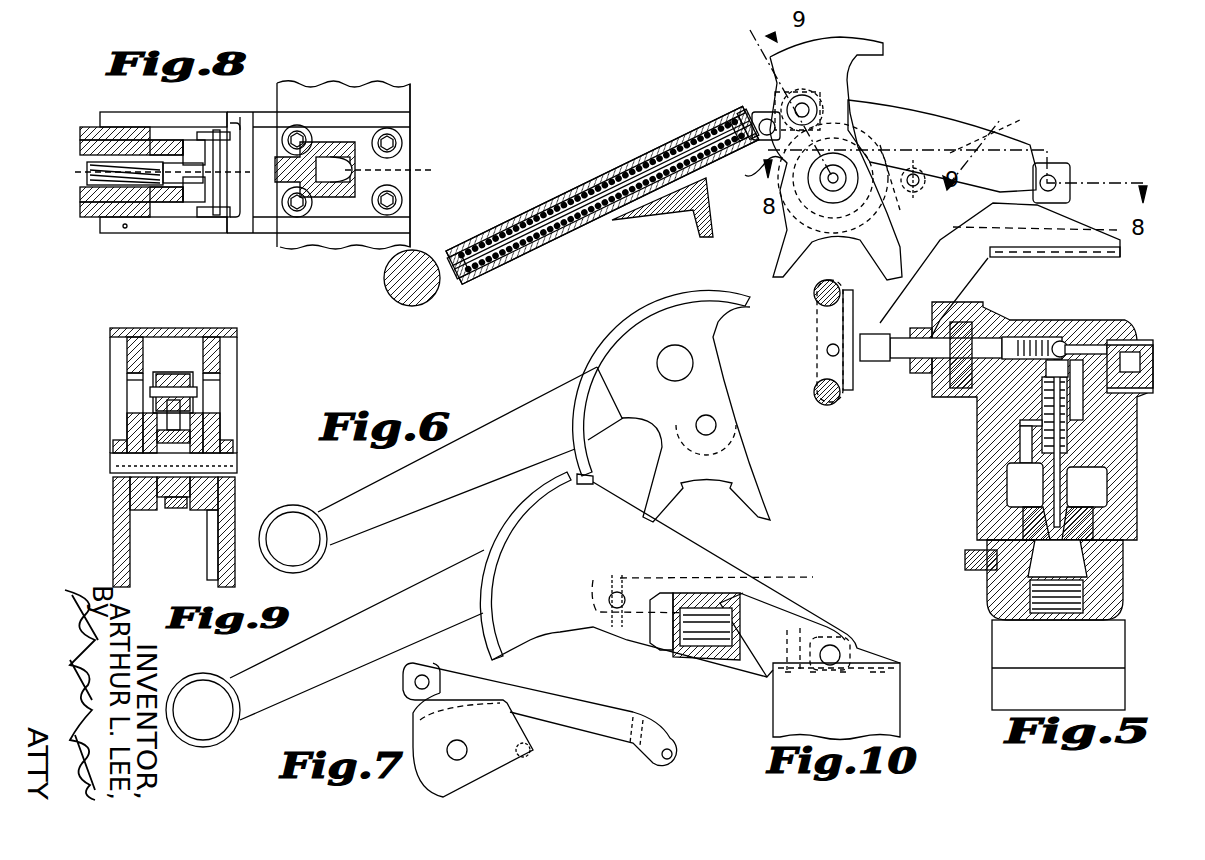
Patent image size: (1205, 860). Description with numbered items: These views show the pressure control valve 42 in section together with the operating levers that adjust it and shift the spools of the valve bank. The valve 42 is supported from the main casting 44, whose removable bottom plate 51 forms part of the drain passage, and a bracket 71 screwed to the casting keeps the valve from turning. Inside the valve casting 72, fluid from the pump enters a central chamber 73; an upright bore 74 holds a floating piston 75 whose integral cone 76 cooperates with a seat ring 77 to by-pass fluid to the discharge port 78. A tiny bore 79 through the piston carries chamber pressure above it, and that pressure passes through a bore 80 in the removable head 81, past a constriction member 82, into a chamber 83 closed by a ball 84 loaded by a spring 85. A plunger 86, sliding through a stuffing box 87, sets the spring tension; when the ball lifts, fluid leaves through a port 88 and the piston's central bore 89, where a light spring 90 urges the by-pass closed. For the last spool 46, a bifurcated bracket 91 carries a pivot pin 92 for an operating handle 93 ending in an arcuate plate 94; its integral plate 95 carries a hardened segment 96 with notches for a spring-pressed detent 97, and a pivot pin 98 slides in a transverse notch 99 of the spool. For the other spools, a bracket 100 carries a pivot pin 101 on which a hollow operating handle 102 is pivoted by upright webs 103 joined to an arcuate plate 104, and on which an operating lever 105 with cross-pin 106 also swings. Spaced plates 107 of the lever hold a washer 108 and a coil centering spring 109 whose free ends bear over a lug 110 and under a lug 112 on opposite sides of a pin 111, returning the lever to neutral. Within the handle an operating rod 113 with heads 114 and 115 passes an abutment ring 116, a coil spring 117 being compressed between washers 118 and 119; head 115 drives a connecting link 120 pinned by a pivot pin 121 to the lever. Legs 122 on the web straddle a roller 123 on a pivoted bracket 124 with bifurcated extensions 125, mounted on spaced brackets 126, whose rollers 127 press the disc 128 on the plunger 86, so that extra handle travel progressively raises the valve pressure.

In FIG. 5, the pressure control valve 42 is at (960, 445).
In FIG. 8, the main body or casting 44 is at (397, 240).
In FIG. 10, the main body or casting 44 is at (883, 703).
In FIG. 8, the spool 46 is at (355, 177).
In FIG. 6, the spool 46 is at (1070, 178).
In FIG. 10, the spool 46 is at (850, 657).
In FIG. 5, the removable bottom plate 51 is at (1107, 688).
In FIG. 5, the bracket 71 is at (965, 557).
In FIG. 5, the main body or casting of the pressure valve 72 is at (980, 453).
In FIG. 5, the central chamber 73 is at (1087, 487).
In FIG. 5, the upright cylindrical bore 74 is at (1020, 423).
In FIG. 5, the piston 75 is at (1020, 453).
In FIG. 5, the by-pass valve cone 76 is at (1073, 493).
In FIG. 5, the seat ring 77 is at (1093, 520).
In FIG. 5, the bottom discharge chamber or port 78 is at (1055, 580).
In FIG. 5, the small bore 79 is at (1027, 477).
In FIG. 5, the bore in the head 80 is at (1100, 312).
In FIG. 5, the removable cap or head 81 is at (1017, 317).
In FIG. 5, the constriction member 82 is at (1067, 427).
In FIG. 5, the chamber 83 is at (1030, 340).
In FIG. 5, the ball 84 is at (1062, 342).
In FIG. 5, the spring 85 is at (1003, 338).
In FIG. 5, the plunger 86 is at (907, 350).
In FIG. 5, the stuffing box 87 is at (970, 373).
In FIG. 5, the open port 88 is at (1077, 352).
In FIG. 5, the central bore in the piston 89 is at (1040, 487).
In FIG. 5, the light spring 90 is at (1060, 440).
In FIG. 10, the bifurcated bracket 91 is at (753, 660).
In FIG. 10, the pivot pin 92 is at (610, 600).
In FIG. 6, the operating handle 93 is at (407, 600).
In FIG. 6, the arcuate plate 94 is at (503, 527).
In FIG. 10, the integral plate and arm 95 is at (702, 576).
In FIG. 10, the hardened segment 96 is at (660, 647).
In FIG. 10, the spring pressed detent 97 is at (687, 650).
In FIG. 10, the pivot pin 98 is at (837, 640).
In FIG. 10, the transverse notch 99 is at (787, 630).
In FIG. 8, the bracket 100 is at (258, 172).
In FIG. 9, the bracket 100 is at (127, 577).
In FIG. 6, the bracket 100 is at (1000, 255).
In FIG. 8, the pivot pin 101 is at (124, 228).
In FIG. 9, the pivot pin 101 is at (122, 463).
In FIG. 6, the pivot pin 101 is at (824, 188).
In FIG. 6, the operating handle 102 is at (497, 427).
In FIG. 8, the upright webs 103 is at (85, 130).
In FIG. 9, the upright webs 103 is at (210, 353).
In FIG. 6, the upright webs 103 is at (850, 57).
In FIG. 9, the arcuate plate 104 is at (163, 328).
In FIG. 6, the arcuate plate 104 is at (647, 312).
In FIG. 8, the operating lever 105 is at (320, 143).
In FIG. 6, the operating lever 105 is at (963, 130).
In FIG. 7, the operating lever 105 is at (553, 690).
In FIG. 8, the cross-pin 106 is at (380, 170).
In FIG. 6, the cross-pin 106 is at (1052, 178).
In FIG. 8, the plates or webs 107 is at (168, 143).
In FIG. 9, the plates or webs 107 is at (140, 427).
In FIG. 7, the plates or webs 107 is at (495, 765).
In FIG. 8, the washer 108 is at (88, 177).
In FIG. 9, the washer 108 is at (185, 450).
In FIG. 8, the coil centering spring 109 is at (130, 158).
In FIG. 9, the coil centering spring 109 is at (177, 508).
In FIG. 6, the coil centering spring 109 is at (880, 218).
In FIG. 8, the lug or abutment 110 is at (197, 137).
In FIG. 6, the lug or abutment 110 is at (910, 195).
In FIG. 7, the lug or abutment 110 is at (535, 752).
In FIG. 8, the pin 111 is at (248, 120).
In FIG. 6, the pin 111 is at (1010, 125).
In FIG. 8, the lug 112 is at (197, 162).
In FIG. 6, the operating rod 113 is at (663, 170).
In FIG. 6, the head 114 is at (450, 300).
In FIG. 6, the head 115 is at (743, 108).
In FIG. 6, the abutment ring 116 is at (733, 125).
In FIG. 6, the coil spring 117 is at (593, 188).
In FIG. 6, the washer 118 is at (463, 287).
In FIG. 6, the washer 119 is at (747, 167).
In FIG. 9, the connecting link 120 is at (175, 372).
In FIG. 6, the connecting link 120 is at (782, 108).
In FIG. 9, the pivot pin 121 is at (193, 391).
In FIG. 6, the pivot pin 121 is at (803, 110).
In FIG. 9, the feet or legs 122 is at (213, 563).
In FIG. 6, the feet or legs 122 is at (887, 248).
In FIG. 6, the roller 123 is at (817, 280).
In FIG. 6, the pivoted bracket 124 is at (827, 317).
In FIG. 6, the bifurcated extensions 125 is at (827, 300).
In FIG. 6, the spaced brackets 126 is at (947, 273).
In FIG. 5, the spaced brackets 126 is at (1025, 293).
In FIG. 6, the upper and lower rollers 127 is at (823, 392).
In FIG. 6, the head or disc 128 is at (850, 405).